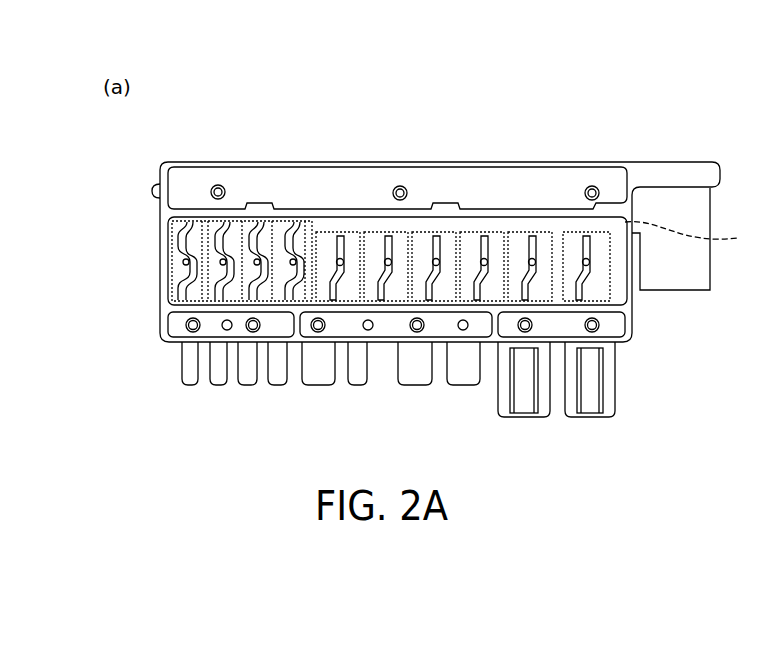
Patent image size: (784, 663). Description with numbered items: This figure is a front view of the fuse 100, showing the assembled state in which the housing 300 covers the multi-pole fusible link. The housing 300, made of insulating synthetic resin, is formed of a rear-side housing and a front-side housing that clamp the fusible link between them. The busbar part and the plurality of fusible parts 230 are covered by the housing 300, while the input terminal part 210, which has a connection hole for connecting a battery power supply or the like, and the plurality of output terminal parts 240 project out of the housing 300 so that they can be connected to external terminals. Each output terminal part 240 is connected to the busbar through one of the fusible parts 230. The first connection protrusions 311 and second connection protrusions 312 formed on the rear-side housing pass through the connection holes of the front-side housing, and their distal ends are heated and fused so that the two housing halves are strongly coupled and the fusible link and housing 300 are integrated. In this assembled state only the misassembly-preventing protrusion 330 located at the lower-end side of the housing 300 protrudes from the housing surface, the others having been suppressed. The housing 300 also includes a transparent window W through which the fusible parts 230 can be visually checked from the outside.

The fuse 100 is at (583, 121).
The housing 300 is at (418, 150).
The first connection protrusions 311 is at (216, 185).
The second connection protrusions 312 is at (189, 330).
The misassembly-preventing protrusions 330 is at (227, 331).
The fusible parts 230 is at (215, 258).
The output terminal parts 240 is at (313, 376).
The input terminal part 210 is at (697, 267).
The transparent window W is at (690, 234).